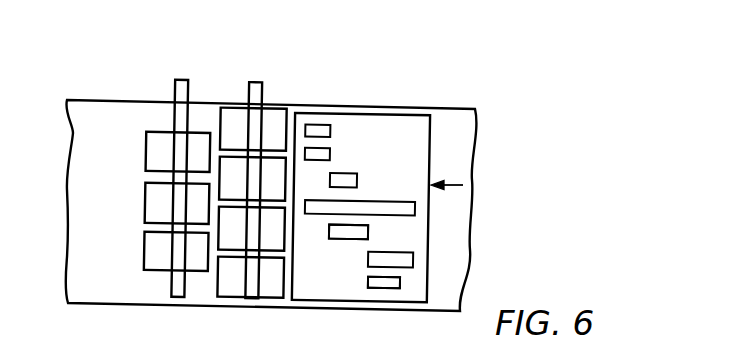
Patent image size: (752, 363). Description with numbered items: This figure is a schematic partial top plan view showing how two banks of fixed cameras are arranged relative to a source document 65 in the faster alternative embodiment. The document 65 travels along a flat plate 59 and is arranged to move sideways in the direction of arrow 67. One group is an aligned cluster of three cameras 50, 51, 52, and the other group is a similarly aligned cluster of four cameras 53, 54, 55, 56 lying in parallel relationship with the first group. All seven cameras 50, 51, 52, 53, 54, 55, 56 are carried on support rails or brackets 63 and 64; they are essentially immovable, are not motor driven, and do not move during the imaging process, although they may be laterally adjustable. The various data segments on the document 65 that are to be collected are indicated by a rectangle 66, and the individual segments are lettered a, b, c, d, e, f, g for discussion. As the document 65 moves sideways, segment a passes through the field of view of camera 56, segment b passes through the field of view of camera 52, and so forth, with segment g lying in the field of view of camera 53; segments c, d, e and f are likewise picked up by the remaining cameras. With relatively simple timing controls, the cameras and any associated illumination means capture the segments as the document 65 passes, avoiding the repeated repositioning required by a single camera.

The camera 50 is at (145, 253).
The camera 51 is at (145, 202).
The camera 52 is at (146, 148).
The camera 53 is at (238, 302).
The camera 54 is at (283, 240).
The camera 55 is at (284, 174).
The camera 56 is at (267, 108).
The flat plate 59 is at (122, 307).
The support rail 63 is at (197, 49).
The support rail 64 is at (252, 81).
The source document 65 is at (428, 132).
The rectangle 66 is at (348, 239).
The arrow 67 is at (463, 185).
The segment a is at (318, 131).
The segment b is at (318, 155).
The segment c is at (343, 179).
The segment d is at (360, 207).
The segment e is at (355, 232).
The segment f is at (390, 259).
The segment g is at (383, 282).